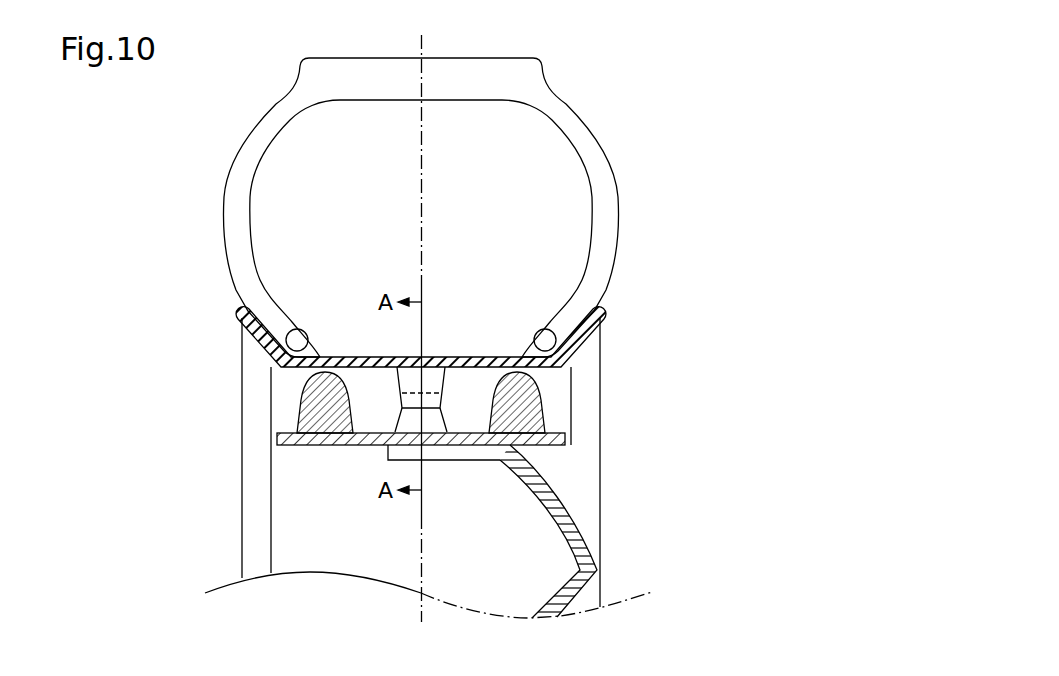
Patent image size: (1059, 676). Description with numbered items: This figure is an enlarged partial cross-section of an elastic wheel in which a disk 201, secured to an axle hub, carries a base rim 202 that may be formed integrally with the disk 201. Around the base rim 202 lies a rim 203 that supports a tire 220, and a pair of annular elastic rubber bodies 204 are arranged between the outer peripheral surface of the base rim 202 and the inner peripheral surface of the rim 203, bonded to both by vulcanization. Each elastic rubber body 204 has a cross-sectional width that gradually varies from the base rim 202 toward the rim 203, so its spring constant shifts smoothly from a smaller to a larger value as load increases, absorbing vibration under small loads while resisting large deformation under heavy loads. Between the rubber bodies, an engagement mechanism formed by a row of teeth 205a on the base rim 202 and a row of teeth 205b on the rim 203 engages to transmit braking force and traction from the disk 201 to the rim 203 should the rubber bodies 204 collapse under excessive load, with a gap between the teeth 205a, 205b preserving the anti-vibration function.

The tire 220 is at (592, 147).
The rim 203 is at (604, 304).
The annular elastic rubber bodies 204 is at (312, 402).
The base rim 202 is at (567, 436).
The row of teeth 205b is at (433, 377).
The row of teeth 205a is at (430, 417).
The disk 201 is at (590, 585).